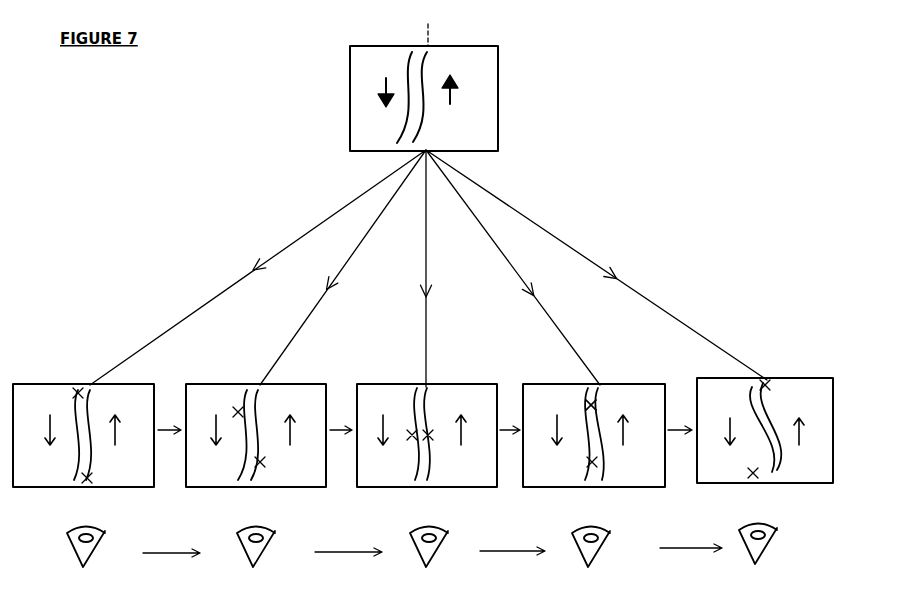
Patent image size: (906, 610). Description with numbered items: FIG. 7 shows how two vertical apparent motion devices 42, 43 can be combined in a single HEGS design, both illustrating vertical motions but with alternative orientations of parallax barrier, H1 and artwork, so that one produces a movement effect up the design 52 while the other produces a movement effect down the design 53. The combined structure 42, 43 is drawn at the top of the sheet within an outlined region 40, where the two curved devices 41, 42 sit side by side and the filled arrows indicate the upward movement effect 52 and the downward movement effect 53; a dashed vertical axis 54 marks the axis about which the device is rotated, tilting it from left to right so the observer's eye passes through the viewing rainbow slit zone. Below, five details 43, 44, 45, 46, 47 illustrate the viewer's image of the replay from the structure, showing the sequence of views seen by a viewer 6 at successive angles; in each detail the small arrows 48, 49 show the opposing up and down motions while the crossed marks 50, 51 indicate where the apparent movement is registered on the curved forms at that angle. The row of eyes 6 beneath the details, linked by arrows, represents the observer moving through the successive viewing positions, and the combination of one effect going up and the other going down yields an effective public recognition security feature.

The viewer 6 is at (435, 553).
The display area 40 is at (446, 98).
The right curved line 41 is at (428, 61).
The vertical apparent motion device 42 is at (404, 51).
The vertical apparent motion device 43 is at (83, 448).
The detail of viewer's image 44 is at (256, 448).
The detail of viewer's image 45 is at (427, 448).
The detail of viewer's image 46 is at (594, 448).
The detail of viewer's image 47 is at (765, 442).
The upward movement arrow 48 is at (122, 446).
The downward movement arrow 49 is at (40, 418).
The upper crossing point 50 is at (614, 407).
The sequence path / lower crossing point 51 is at (428, 310).
The upward movement effect 52 is at (468, 74).
The downward movement effect 53 is at (369, 108).
The vertical axis 54 is at (446, 23).